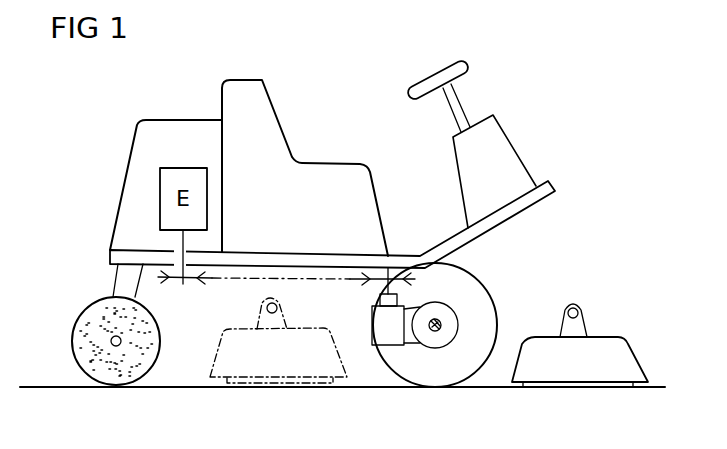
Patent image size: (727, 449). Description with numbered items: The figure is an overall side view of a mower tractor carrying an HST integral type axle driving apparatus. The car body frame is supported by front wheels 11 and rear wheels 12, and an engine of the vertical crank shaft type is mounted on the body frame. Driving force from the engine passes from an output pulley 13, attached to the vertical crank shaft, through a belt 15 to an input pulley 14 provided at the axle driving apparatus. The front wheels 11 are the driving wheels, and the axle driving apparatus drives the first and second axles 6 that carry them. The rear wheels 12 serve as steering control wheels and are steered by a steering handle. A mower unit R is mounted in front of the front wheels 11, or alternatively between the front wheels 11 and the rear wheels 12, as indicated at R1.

The first and second axles 6 is at (432, 333).
The front wheels 11 is at (484, 284).
The rear wheels 12 is at (77, 316).
The output pulley 13 is at (183, 284).
The input pulley 14 is at (380, 268).
The belt 15 is at (308, 280).
The mower unit R is at (608, 332).
The refuse container (second) R1 is at (217, 357).